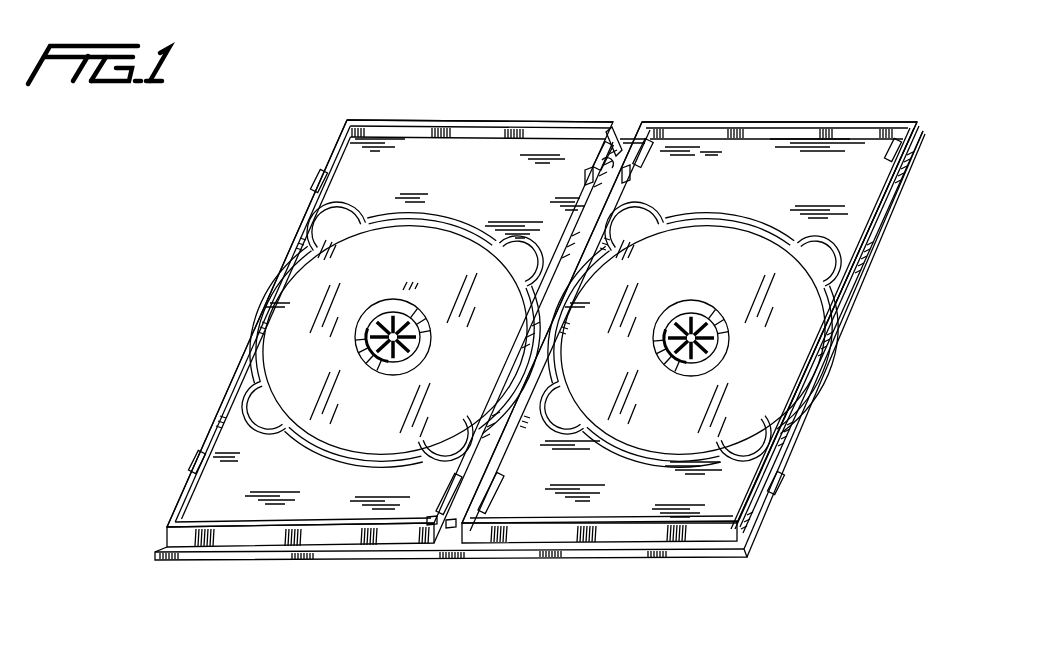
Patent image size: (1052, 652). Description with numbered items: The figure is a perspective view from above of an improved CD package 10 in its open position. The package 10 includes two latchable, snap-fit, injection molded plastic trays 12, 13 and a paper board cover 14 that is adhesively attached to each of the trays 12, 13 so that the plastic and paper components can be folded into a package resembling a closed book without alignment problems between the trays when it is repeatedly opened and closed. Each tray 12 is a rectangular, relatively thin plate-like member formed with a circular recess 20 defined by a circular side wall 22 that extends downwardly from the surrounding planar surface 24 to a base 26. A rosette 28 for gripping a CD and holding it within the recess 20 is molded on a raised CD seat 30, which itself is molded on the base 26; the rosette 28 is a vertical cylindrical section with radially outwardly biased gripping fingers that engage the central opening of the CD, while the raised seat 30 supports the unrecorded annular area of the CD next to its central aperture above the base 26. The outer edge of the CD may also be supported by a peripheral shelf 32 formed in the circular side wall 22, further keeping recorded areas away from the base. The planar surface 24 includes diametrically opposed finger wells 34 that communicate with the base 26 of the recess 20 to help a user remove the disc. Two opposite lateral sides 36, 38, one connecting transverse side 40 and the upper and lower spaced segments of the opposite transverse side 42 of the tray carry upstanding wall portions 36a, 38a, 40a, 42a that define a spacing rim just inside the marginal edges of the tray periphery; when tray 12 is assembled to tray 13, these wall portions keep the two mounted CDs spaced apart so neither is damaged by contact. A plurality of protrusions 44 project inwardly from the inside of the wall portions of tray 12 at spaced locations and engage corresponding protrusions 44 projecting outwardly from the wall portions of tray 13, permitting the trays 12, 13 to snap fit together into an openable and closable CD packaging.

The CD package 10 is at (763, 66).
The tray 12 is at (618, 512).
The tray 13 is at (330, 507).
The paper board cover 14 is at (165, 562).
The circular recess 20 is at (306, 312).
The circular side wall 22 is at (405, 216).
The planar surface 24 is at (470, 181).
The base 26 is at (287, 370).
The rosette 28 is at (414, 334).
The raised CD seat 30 is at (385, 372).
The peripheral shelf 32 is at (443, 226).
The finger wells 34 is at (345, 226).
The lateral side 36 is at (197, 542).
The wall portion 36a is at (235, 540).
The lateral side 38 is at (515, 125).
The wall portion 38a is at (473, 128).
The transverse side 40 is at (243, 355).
The wall portion 40a is at (227, 388).
The transverse side 42 is at (615, 130).
The wall portion 42a is at (422, 613).
The protrusions 44 is at (314, 178).